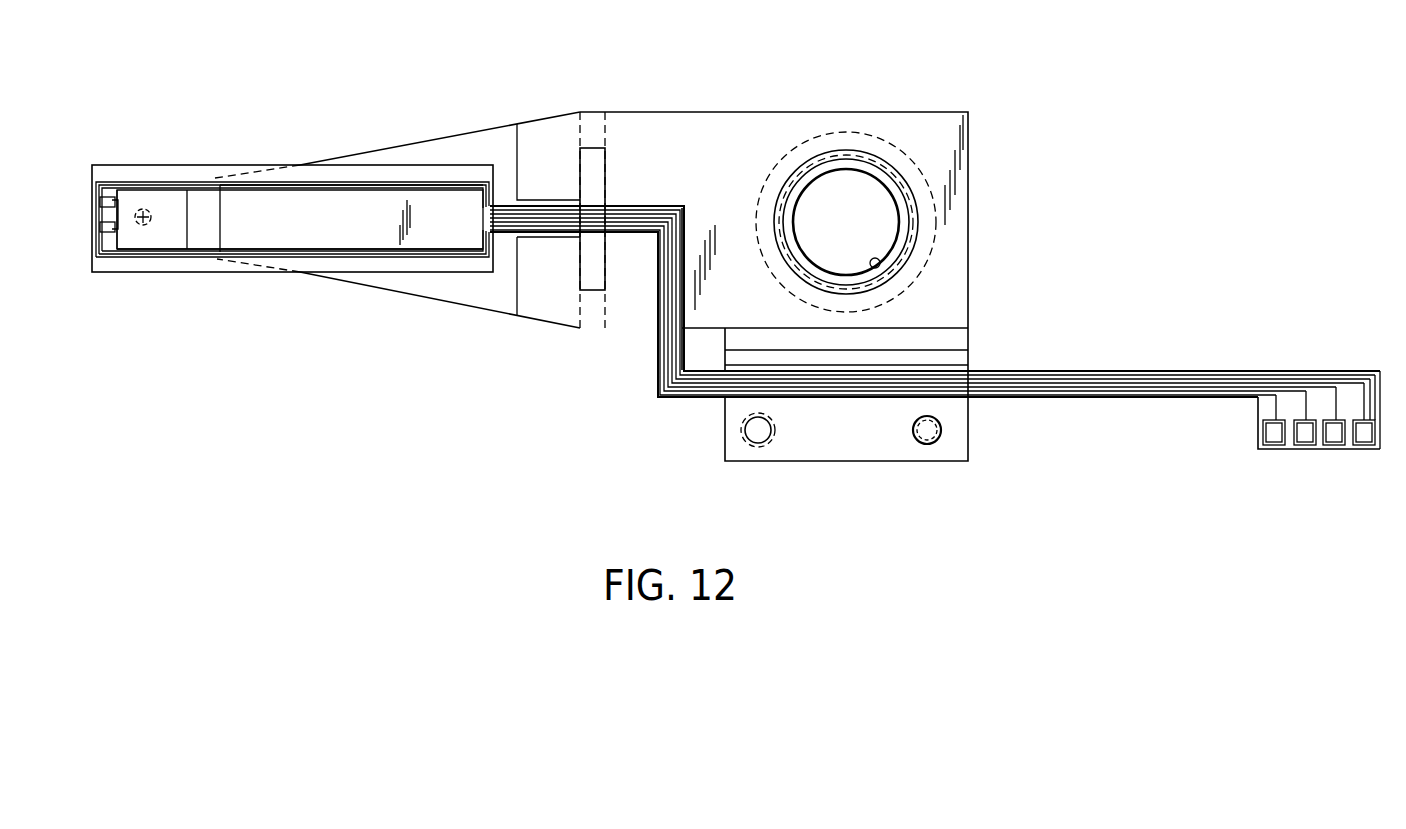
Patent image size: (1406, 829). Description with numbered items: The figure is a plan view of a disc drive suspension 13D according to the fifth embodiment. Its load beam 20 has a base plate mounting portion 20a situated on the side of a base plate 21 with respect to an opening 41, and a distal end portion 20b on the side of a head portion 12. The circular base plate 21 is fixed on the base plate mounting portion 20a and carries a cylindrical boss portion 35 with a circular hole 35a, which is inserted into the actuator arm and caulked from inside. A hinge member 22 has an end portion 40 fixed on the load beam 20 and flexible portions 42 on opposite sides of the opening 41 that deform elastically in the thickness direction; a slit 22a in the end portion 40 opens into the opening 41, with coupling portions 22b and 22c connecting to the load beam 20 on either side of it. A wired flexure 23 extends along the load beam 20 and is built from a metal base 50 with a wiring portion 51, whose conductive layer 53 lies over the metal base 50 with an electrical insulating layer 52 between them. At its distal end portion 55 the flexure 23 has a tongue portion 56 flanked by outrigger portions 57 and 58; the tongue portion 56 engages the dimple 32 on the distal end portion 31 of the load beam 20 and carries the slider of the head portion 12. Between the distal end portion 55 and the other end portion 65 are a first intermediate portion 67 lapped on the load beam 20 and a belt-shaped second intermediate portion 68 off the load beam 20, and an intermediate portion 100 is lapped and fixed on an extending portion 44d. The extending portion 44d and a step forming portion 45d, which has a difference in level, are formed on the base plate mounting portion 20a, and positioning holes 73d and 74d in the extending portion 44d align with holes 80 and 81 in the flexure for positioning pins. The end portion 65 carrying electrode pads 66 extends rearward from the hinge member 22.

The head portion 12 is at (118, 278).
The suspension 13D is at (423, 83).
The load beam 20 is at (390, 142).
The base plate mounting portion 20a is at (718, 130).
The distal end portion 20b is at (420, 150).
The base plate 21 is at (834, 133).
The hinge member 22 is at (652, 110).
The slit 22a is at (546, 200).
The coupling portion 22b is at (516, 130).
The coupling portion 22c is at (517, 293).
The flexure 23 is at (470, 276).
The distal end portion 31 is at (130, 186).
The dimple 32 is at (145, 226).
The boss portion 35 is at (774, 206).
The circular hole 35a is at (880, 264).
The end portion 40 is at (546, 323).
The opening 41 is at (606, 168).
The flexible portions 42 is at (596, 112).
The extending portion 44d is at (725, 437).
The step forming portion 45d is at (968, 358).
The metal base 50 is at (398, 273).
The wiring portion 51 is at (330, 185).
The electrical insulating layer 52 is at (1376, 380).
The conductive layer 53 is at (1370, 388).
The distal end portion 55 is at (97, 207).
The tongue portion 56 is at (172, 238).
The outrigger portion 57 is at (176, 170).
The outrigger portion 58 is at (207, 266).
The end portion 65 is at (1360, 450).
The electrode pads 66 is at (1274, 440).
The first intermediate portion 67 is at (353, 273).
The second intermediate portion 68 is at (660, 380).
The positioning hole 73d is at (933, 444).
The positioning hole 74d is at (774, 446).
The hole 80 is at (925, 443).
The hole 81 is at (760, 442).
The intermediate portion 100 is at (850, 455).